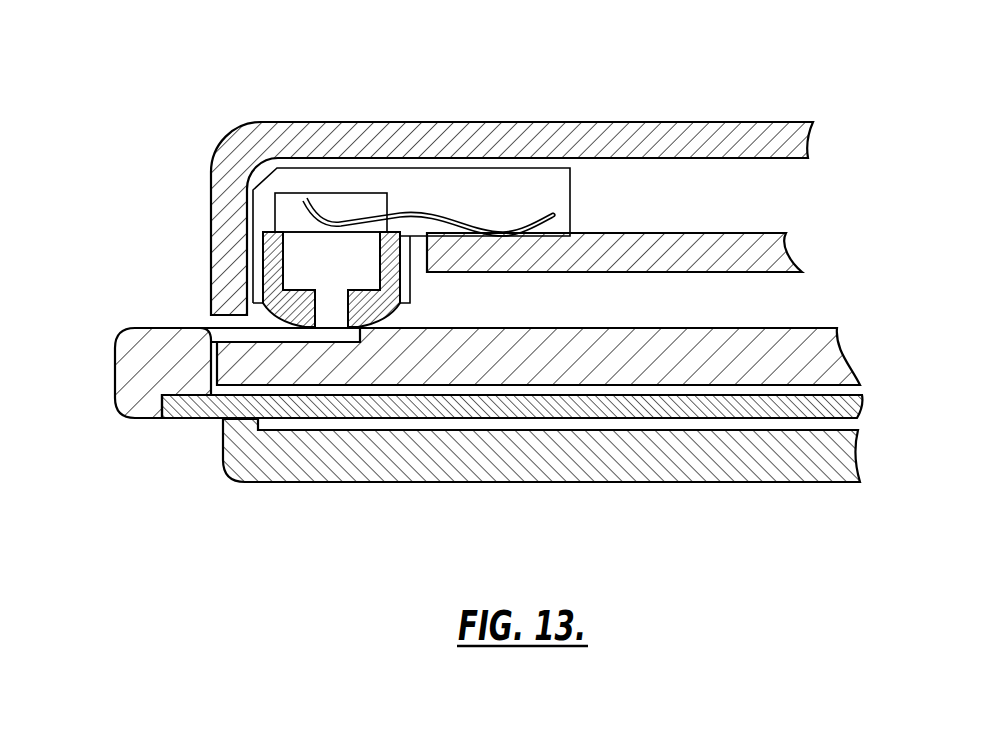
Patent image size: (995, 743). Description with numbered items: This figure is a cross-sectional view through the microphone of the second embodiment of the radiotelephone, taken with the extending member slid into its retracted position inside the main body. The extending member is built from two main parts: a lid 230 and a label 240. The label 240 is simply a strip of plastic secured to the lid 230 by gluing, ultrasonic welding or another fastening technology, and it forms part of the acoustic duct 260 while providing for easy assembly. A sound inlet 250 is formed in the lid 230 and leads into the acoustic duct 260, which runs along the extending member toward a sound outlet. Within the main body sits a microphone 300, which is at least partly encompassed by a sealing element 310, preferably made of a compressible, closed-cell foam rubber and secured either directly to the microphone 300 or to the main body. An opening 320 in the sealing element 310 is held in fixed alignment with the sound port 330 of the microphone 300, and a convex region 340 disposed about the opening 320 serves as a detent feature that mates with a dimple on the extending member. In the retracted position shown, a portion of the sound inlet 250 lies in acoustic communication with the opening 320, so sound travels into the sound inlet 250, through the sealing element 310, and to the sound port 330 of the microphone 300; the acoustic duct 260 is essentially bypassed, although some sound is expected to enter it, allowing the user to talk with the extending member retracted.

The lid 230 is at (157, 353).
The label 240 is at (293, 410).
The sound inlet 250 is at (231, 329).
The acoustic duct 260 is at (533, 390).
The microphone 300 is at (313, 250).
The sealing element 310 is at (402, 247).
The opening 320 is at (285, 235).
The sound port 330 is at (336, 295).
The convex region 340 is at (355, 318).